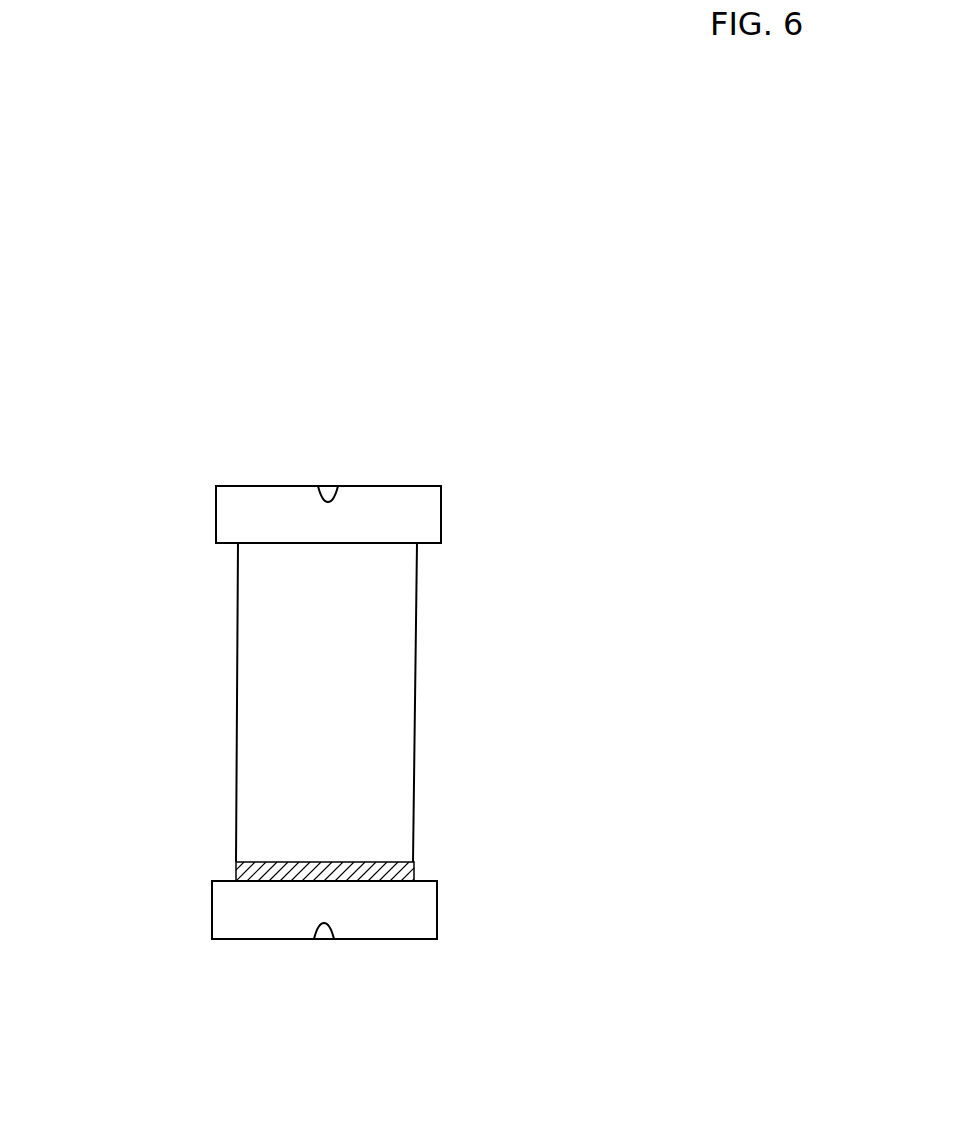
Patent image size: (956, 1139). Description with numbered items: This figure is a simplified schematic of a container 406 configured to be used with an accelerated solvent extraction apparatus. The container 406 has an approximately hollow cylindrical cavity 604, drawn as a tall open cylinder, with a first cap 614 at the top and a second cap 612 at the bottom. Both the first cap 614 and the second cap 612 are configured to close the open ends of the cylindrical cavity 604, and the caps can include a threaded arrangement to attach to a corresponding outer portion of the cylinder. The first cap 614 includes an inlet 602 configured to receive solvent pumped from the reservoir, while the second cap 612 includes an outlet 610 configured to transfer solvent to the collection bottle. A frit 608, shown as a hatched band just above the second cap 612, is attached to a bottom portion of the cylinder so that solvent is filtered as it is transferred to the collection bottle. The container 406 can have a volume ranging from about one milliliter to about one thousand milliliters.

The container 406 is at (213, 440).
The inlet 602 is at (330, 486).
The cylindrical cavity 604 is at (392, 676).
The frit 608 is at (414, 873).
The outlet 610 is at (324, 939).
The second cap 612 is at (437, 927).
The first cap 614 is at (441, 518).